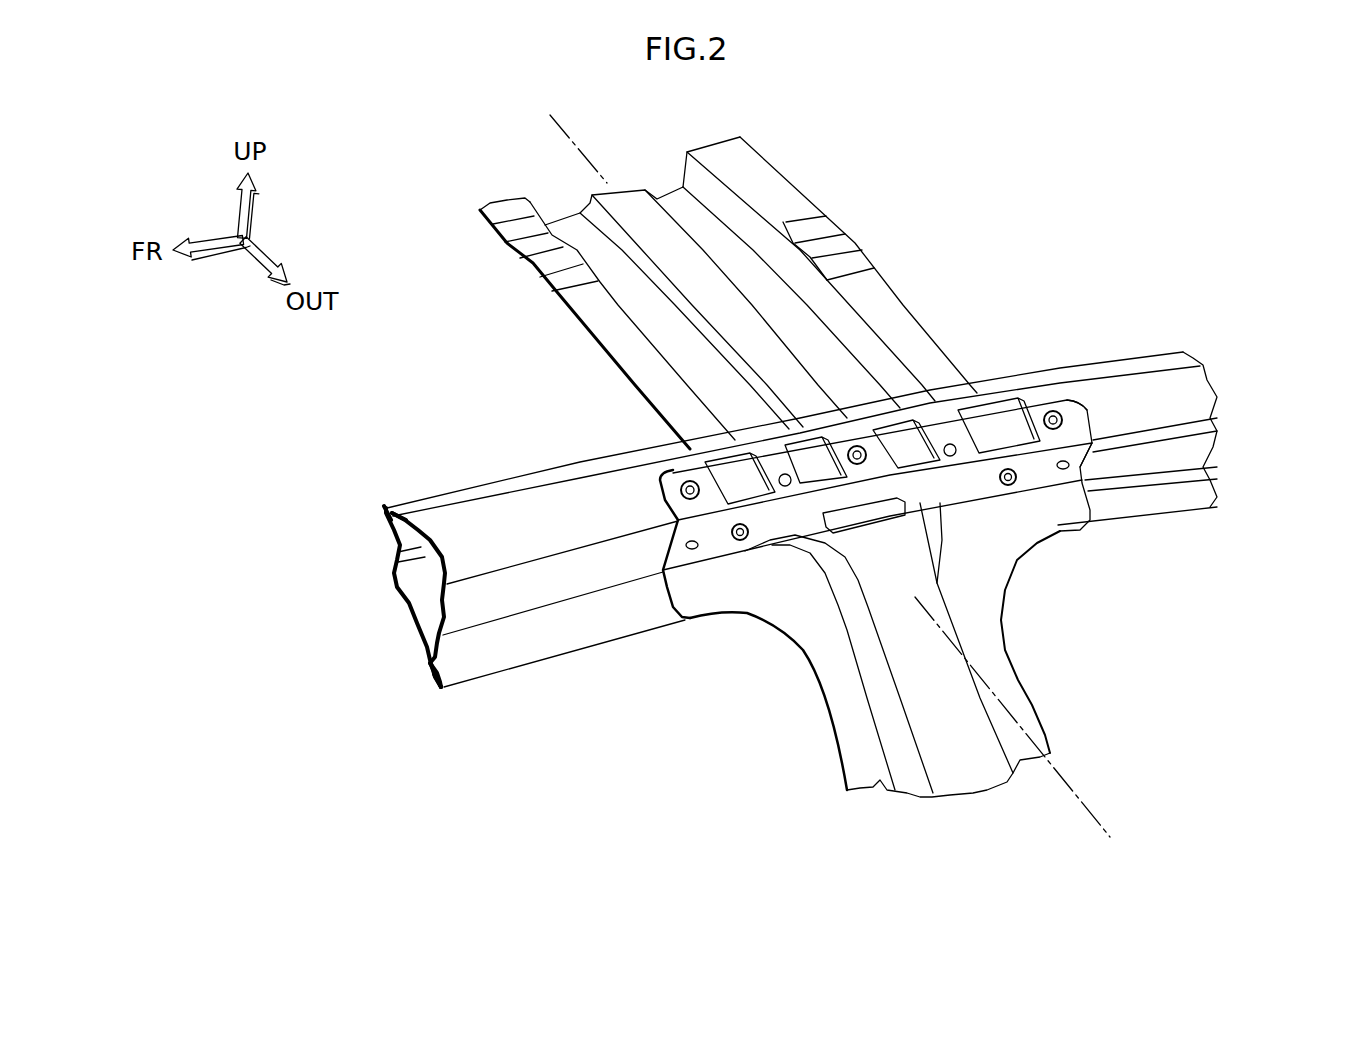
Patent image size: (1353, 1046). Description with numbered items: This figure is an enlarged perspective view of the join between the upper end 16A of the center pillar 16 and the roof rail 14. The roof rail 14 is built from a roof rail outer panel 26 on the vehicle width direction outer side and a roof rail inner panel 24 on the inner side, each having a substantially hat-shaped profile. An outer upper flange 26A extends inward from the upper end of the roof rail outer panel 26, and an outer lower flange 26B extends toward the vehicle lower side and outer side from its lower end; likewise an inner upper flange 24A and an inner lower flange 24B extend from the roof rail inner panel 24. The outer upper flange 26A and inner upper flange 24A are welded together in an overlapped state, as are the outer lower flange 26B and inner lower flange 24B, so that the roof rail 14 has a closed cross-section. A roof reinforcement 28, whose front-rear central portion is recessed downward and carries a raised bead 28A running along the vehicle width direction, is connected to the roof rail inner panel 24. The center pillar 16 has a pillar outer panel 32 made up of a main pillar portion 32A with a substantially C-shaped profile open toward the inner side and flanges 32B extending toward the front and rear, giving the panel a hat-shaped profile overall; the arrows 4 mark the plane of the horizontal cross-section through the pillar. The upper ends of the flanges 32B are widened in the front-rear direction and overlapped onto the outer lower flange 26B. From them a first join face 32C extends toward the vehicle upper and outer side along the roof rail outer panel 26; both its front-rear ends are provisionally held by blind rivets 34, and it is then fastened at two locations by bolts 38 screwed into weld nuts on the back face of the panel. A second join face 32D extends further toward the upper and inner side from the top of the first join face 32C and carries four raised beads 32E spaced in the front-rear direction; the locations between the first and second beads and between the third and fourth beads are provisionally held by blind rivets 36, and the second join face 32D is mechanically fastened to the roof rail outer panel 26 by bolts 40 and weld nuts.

The section line 4- 4 is at (546, 121).
The roof rail 14 is at (733, 551).
The center pillar 16 is at (889, 565).
The upper end of the center pillar 16A is at (889, 565).
The roof rail inner panel 24 is at (385, 622).
The inner upper flange 24A is at (388, 518).
The inner lower flange 24B is at (430, 683).
The roof rail outer panel 26 is at (460, 563).
The outer upper flange 26A is at (396, 512).
The outer lower flange 26B is at (447, 671).
The roof reinforcement 28 is at (728, 273).
The raised bead 28A is at (700, 248).
The pillar outer panel 32 is at (873, 565).
The main pillar portion 32A is at (890, 743).
The flanges 32B is at (828, 670).
The first join face 32C is at (1077, 450).
The second join face 32D is at (1073, 413).
The raised beads 32E is at (727, 462).
The blind rivets 34 is at (692, 550).
The blind rivets 36 is at (785, 472).
The bolts 38 is at (739, 545).
The bolts 40 is at (687, 477).